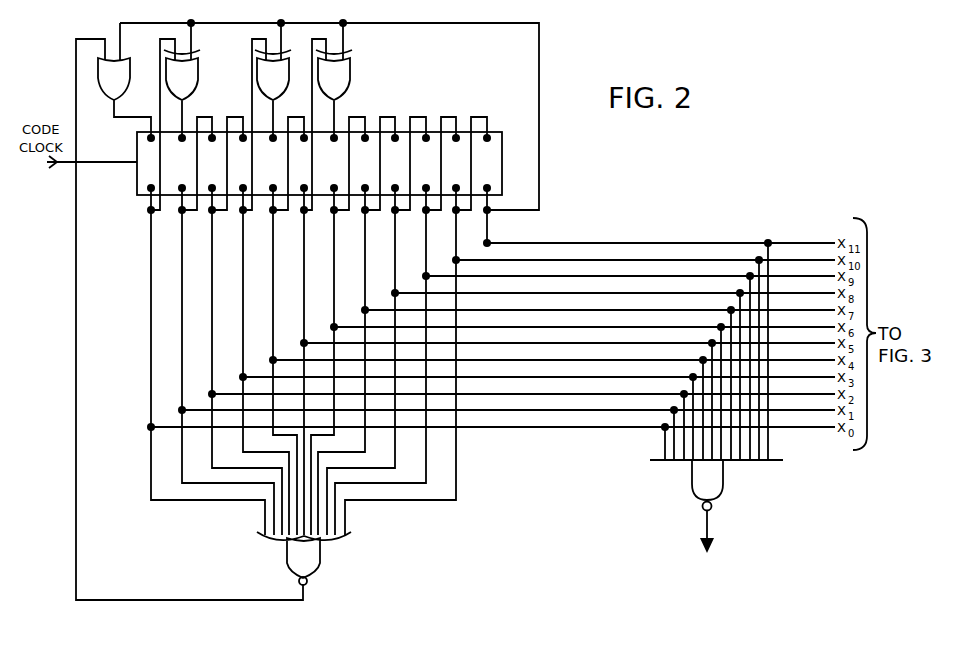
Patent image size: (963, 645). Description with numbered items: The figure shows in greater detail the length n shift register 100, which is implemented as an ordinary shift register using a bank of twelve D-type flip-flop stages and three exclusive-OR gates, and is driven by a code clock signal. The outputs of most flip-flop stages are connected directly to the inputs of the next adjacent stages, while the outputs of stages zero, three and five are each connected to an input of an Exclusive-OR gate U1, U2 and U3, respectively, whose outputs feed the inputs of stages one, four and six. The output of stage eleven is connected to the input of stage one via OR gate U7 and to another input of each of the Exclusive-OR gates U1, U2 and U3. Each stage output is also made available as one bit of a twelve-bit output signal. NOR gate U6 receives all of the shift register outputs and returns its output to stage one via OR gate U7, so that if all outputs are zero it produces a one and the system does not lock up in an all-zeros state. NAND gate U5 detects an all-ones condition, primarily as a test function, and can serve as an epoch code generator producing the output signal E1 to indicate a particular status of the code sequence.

The shift register 100 is at (562, 184).
The Exclusive-OR gate U1 is at (182, 94).
The Exclusive-OR gate U2 is at (273, 94).
The Exclusive-OR gate U3 is at (334, 94).
The NAND gate U5 is at (716, 485).
The NOR gate U6 is at (304, 558).
The OR gate U7 is at (124, 98).
The output signal E1 is at (710, 545).